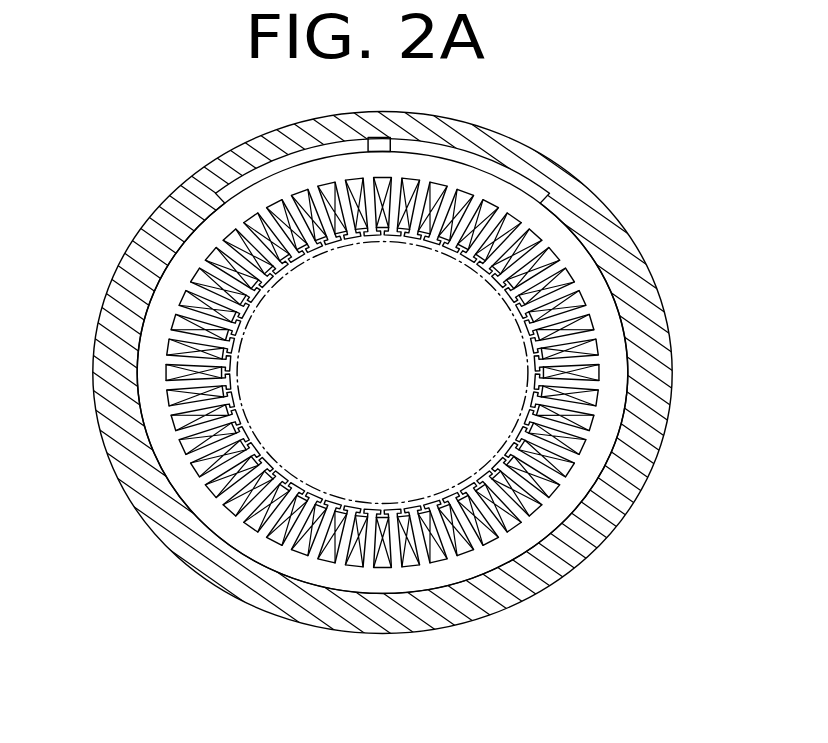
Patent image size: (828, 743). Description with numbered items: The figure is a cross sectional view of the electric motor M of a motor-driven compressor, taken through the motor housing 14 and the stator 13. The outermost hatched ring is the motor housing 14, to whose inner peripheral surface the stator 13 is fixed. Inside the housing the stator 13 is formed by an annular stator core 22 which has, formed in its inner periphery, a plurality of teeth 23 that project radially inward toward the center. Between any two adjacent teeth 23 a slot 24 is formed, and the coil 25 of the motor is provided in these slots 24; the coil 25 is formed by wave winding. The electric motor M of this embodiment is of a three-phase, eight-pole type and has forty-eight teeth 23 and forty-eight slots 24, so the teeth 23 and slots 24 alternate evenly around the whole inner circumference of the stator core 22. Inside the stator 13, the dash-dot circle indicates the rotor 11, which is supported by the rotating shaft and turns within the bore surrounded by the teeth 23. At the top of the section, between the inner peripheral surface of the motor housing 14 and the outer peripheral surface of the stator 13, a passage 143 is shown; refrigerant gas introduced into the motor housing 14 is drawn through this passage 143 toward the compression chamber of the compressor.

The electric motor M is at (205, 149).
The rotor 11 is at (400, 506).
The stator 13 is at (629, 193).
The motor housing 14 is at (622, 508).
The passage 143 is at (383, 136).
The annular stator core 22 is at (553, 227).
The teeth 23 is at (502, 278).
The slots 24 is at (548, 268).
The coil 25 is at (548, 250).